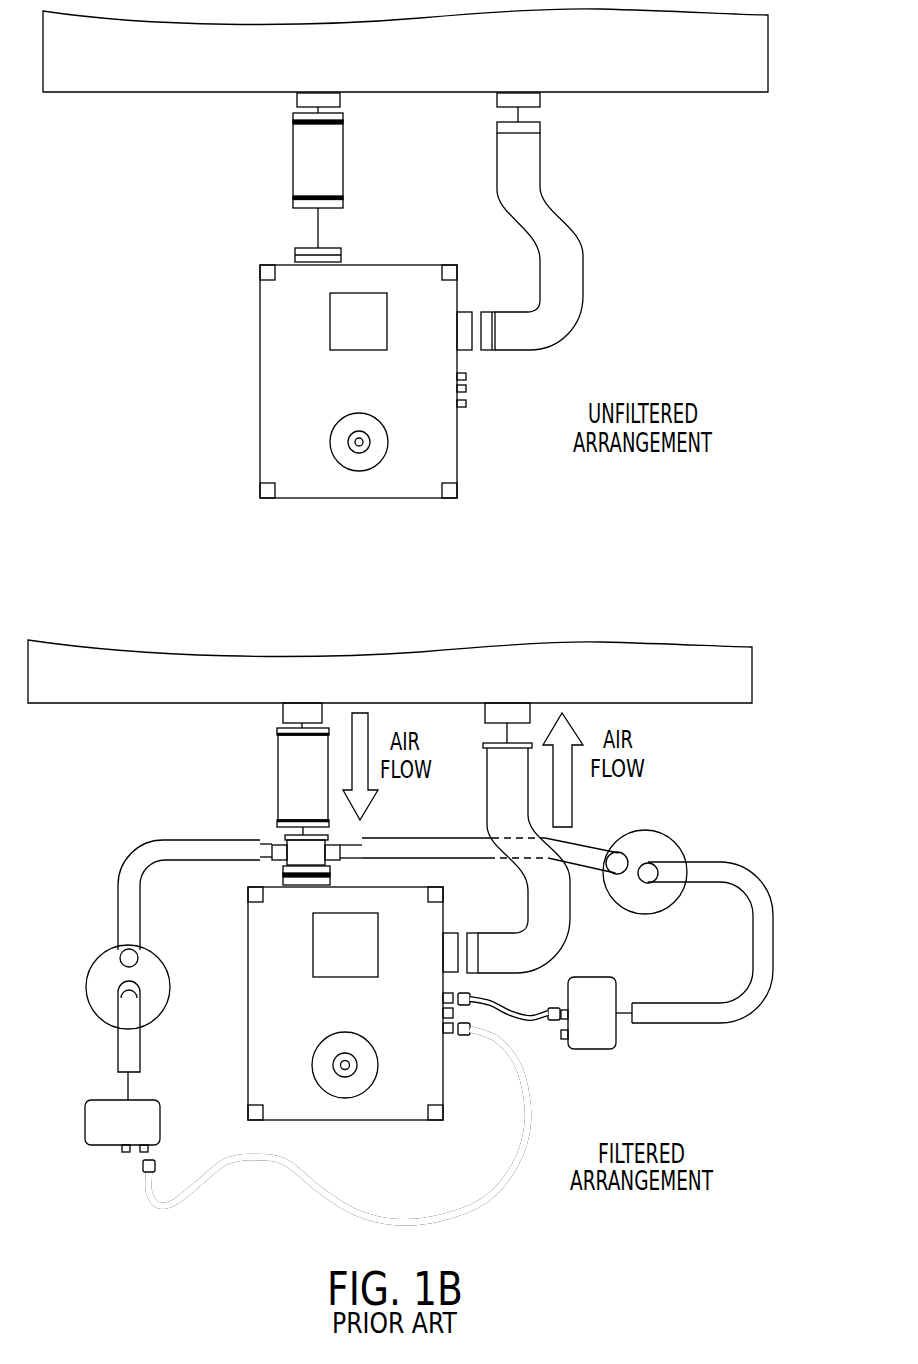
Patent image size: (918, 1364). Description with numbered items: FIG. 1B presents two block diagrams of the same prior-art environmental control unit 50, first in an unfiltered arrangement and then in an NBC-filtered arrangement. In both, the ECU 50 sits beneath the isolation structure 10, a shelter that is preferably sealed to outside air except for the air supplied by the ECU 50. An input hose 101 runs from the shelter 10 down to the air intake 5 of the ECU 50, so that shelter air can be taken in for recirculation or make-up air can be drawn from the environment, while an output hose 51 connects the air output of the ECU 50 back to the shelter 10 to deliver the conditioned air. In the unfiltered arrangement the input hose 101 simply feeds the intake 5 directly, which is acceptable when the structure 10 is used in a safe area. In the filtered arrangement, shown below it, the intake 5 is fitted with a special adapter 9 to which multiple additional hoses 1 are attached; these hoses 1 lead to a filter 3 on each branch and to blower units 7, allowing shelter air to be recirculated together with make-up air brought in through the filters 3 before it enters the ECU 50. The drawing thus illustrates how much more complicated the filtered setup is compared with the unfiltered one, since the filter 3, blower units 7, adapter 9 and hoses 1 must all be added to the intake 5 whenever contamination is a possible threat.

The hoses 1 is at (598, 846).
The filter 3 is at (645, 912).
The intake 5 is at (341, 252).
The blower units 7 is at (592, 1050).
The special adapter 9 is at (328, 862).
The isolation structure 10 is at (652, 92).
The environmental control unit 50 is at (390, 498).
The output hose 51 is at (575, 238).
The input hose 101 is at (293, 170).